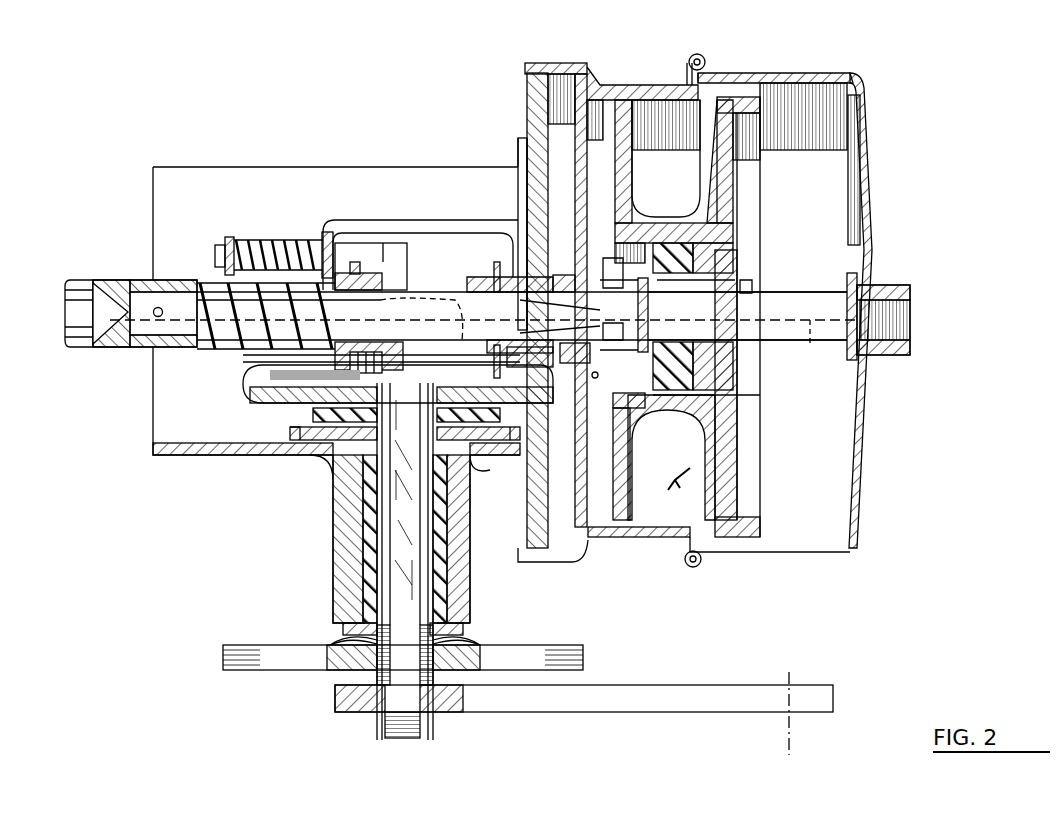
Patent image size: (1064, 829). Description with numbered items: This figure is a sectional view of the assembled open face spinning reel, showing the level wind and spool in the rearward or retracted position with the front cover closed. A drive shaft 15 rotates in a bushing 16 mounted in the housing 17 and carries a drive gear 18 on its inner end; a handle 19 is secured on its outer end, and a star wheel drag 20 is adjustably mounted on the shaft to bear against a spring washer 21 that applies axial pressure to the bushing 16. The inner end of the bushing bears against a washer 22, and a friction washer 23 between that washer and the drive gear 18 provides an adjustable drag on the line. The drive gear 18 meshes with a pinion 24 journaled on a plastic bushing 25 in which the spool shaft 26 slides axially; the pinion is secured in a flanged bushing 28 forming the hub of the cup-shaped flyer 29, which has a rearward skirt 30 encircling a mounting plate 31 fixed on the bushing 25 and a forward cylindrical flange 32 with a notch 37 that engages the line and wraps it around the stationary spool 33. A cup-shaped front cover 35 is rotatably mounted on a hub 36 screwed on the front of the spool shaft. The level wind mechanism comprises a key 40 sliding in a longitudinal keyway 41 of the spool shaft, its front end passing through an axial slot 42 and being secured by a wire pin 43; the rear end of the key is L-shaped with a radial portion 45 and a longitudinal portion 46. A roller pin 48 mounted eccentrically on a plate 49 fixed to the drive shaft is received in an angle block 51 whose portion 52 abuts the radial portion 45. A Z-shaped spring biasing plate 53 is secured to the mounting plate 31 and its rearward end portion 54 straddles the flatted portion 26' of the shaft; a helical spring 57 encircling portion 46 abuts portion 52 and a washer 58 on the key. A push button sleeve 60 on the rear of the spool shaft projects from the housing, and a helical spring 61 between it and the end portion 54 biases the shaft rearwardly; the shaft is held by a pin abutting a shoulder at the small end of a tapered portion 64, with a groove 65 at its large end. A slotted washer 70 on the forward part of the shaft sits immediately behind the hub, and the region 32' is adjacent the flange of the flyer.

The drive shaft 15 is at (395, 552).
The bushing 16 is at (365, 598).
The housing 17 is at (345, 525).
The drive gear 18 is at (262, 392).
The handle 19 is at (632, 703).
The star wheel drag 20 is at (585, 655).
The spring washer 21 is at (478, 642).
The washer 22 is at (325, 432).
The friction washer 23 is at (315, 412).
The pinion 24 is at (555, 250).
The bushing 25 is at (513, 237).
The spool shaft 26 is at (809, 280).
The flatted portion of the shaft 26' is at (256, 290).
The flanged bushing 28 is at (625, 395).
The flyer 29 is at (612, 75).
The skirt 30 is at (548, 63).
The mounting plate 31 is at (533, 95).
The cylindrical flange 32 is at (639, 556).
The diaphragm block 32' is at (747, 392).
The spool 33 is at (735, 472).
The front flange or cover 35 is at (870, 168).
The hub 36 is at (900, 282).
The notch 37 is at (672, 486).
The key 40 is at (460, 295).
The keyway 41 is at (812, 345).
The axial slot 42 is at (740, 252).
The wire pin 43 is at (765, 272).
The radial portion 45 is at (397, 282).
The longitudinal portion 46 is at (358, 278).
The roller pin 48 is at (400, 362).
The plate 49 is at (270, 376).
The angle block 51 is at (243, 360).
The portion 52 is at (392, 285).
The Z-shaped spring biasing plate 53 is at (386, 262).
The rearward end portion 54 is at (322, 252).
The helical spring 57 is at (236, 242).
The washer 58 is at (228, 245).
The push button sleeve 60 is at (82, 285).
The helical spring 61 is at (210, 342).
The tapered portion 64 is at (650, 304).
The groove 65 is at (510, 290).
The slotted washer 70 is at (645, 272).